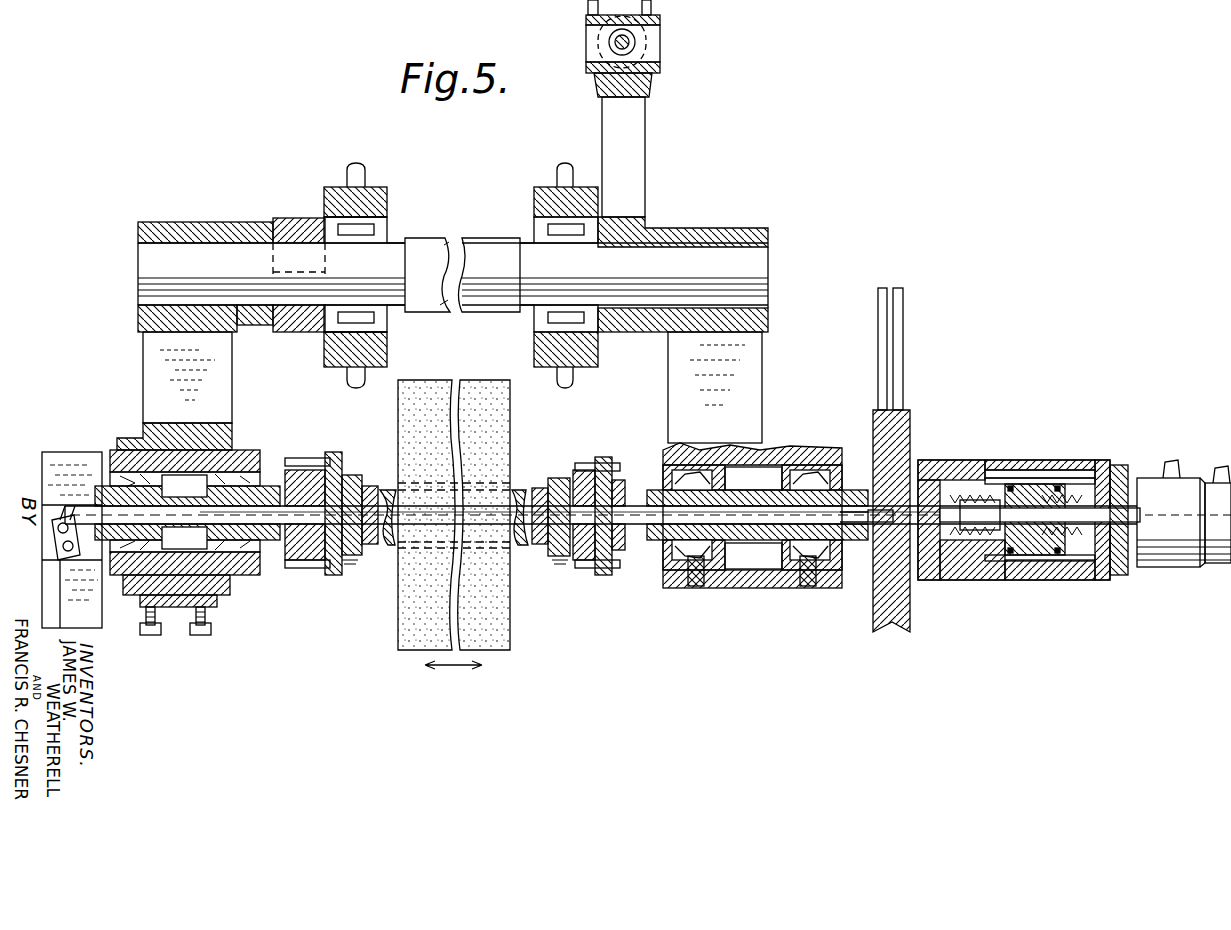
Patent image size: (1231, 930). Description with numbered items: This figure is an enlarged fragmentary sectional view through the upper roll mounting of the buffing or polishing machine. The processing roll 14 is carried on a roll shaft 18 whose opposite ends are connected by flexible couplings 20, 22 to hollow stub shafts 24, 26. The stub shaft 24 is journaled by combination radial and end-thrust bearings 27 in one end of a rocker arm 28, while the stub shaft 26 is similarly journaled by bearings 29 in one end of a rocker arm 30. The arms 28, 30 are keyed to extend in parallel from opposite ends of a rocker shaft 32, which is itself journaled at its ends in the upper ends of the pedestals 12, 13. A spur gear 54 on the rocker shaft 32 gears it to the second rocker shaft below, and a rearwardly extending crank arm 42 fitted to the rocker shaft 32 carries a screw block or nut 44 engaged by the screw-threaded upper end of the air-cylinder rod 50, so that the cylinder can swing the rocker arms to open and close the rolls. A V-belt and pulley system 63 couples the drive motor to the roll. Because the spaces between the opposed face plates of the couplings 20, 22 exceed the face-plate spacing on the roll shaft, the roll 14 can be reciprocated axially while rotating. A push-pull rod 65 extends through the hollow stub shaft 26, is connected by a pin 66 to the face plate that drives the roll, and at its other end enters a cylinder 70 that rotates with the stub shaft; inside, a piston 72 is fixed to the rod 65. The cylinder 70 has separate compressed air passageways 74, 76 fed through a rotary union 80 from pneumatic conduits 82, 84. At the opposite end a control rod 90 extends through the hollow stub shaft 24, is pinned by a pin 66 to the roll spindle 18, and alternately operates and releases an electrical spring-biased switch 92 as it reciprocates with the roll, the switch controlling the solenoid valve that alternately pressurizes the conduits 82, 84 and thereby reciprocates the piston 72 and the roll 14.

The pedestal 12 is at (387, 190).
The pedestal 13 is at (546, 190).
The processing roll 14 is at (468, 380).
The roll shaft 18 is at (387, 490).
The flexible coupling 20 is at (330, 450).
The flexible coupling 22 is at (599, 451).
The hollow stub shaft 24 is at (290, 476).
The hollow stub shaft 26 is at (666, 470).
The combination radial and end-thrust bearings 27 is at (113, 465).
The rocker arm 28 is at (143, 366).
The bearings 29 is at (695, 586).
The rocker arm 30 is at (760, 378).
The rocker shaft 32 is at (150, 242).
The crank arm 42 is at (640, 130).
The screw block or nut 44 is at (660, 20).
The rod 50 is at (630, 41).
The spur gear 54 is at (297, 222).
The V-belt and pulley system 63 is at (922, 421).
The push-pull rod 65 is at (866, 540).
The pin 66 is at (352, 560).
The cylinder 70 is at (1045, 580).
The piston 72 is at (1035, 484).
The compressed air passageway 74 is at (1060, 478).
The compressed air passageway 76 is at (1110, 560).
The rotary union 80 is at (1176, 570).
The pneumatic conduit 82 is at (1171, 461).
The pneumatic conduit 84 is at (1220, 467).
The control rod 90 is at (65, 500).
The electrical spring-biased switch 92 is at (58, 560).